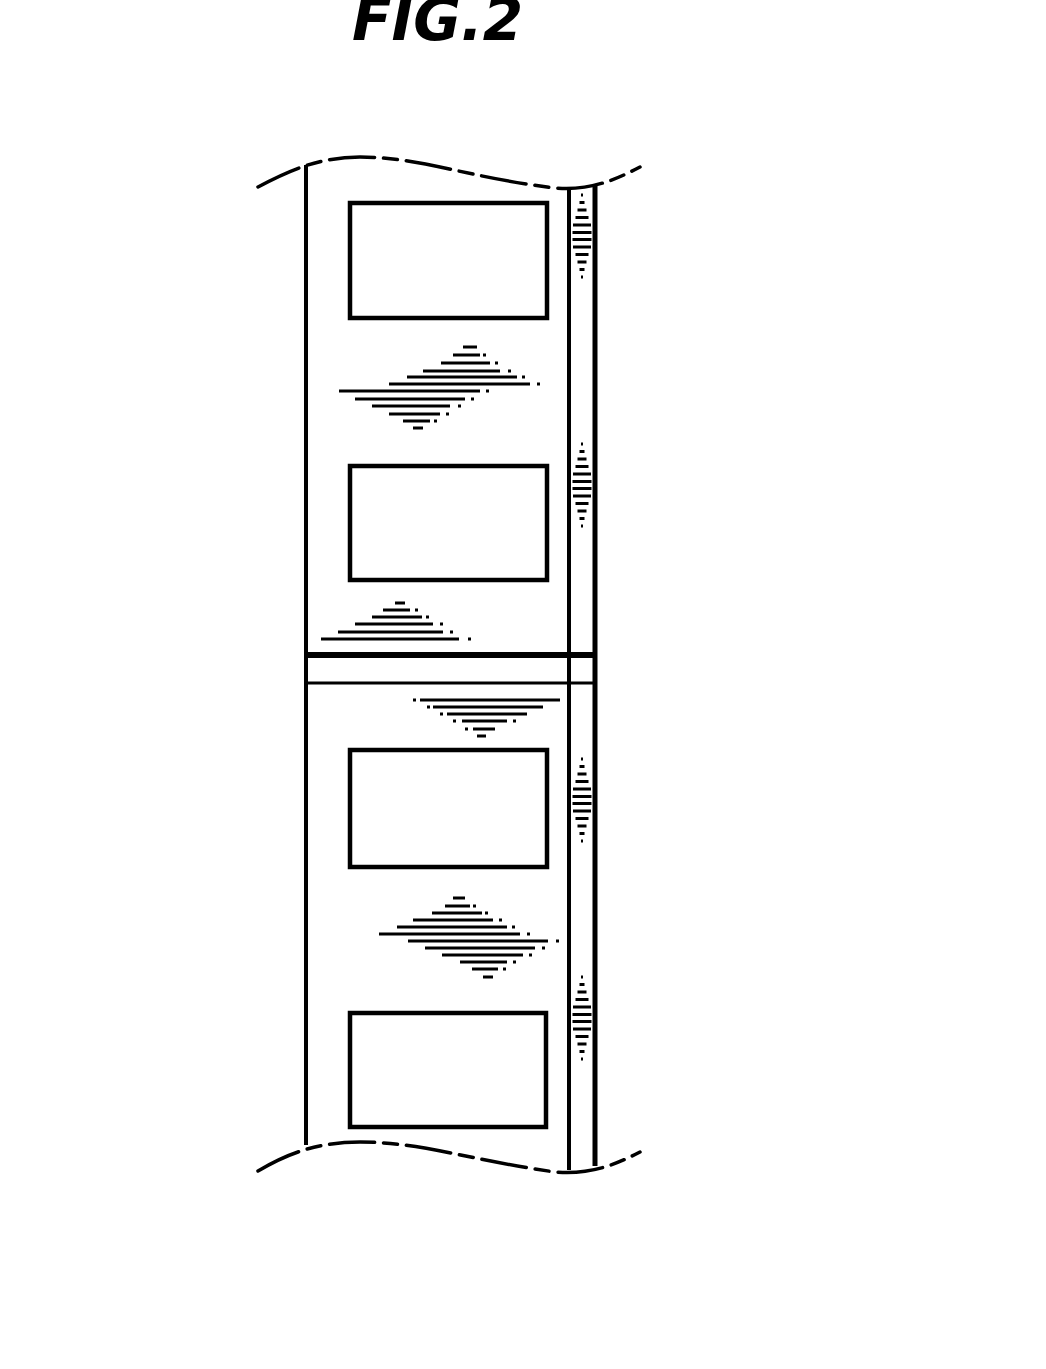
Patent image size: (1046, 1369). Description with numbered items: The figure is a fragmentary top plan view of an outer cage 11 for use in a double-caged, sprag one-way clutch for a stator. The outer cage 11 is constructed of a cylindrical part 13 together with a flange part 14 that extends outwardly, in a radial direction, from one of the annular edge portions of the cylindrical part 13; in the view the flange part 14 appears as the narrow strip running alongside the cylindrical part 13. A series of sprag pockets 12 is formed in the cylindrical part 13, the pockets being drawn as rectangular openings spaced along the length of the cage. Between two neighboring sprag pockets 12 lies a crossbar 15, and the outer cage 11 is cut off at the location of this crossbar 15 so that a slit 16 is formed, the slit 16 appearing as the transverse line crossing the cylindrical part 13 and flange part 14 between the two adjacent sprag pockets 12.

The outer cage 11 is at (378, 1174).
The sprag pocket 12 is at (387, 526).
The cylindrical part 13 is at (330, 296).
The flange part 14 is at (586, 294).
The crossbar 15 is at (473, 620).
The slit 16 is at (575, 670).